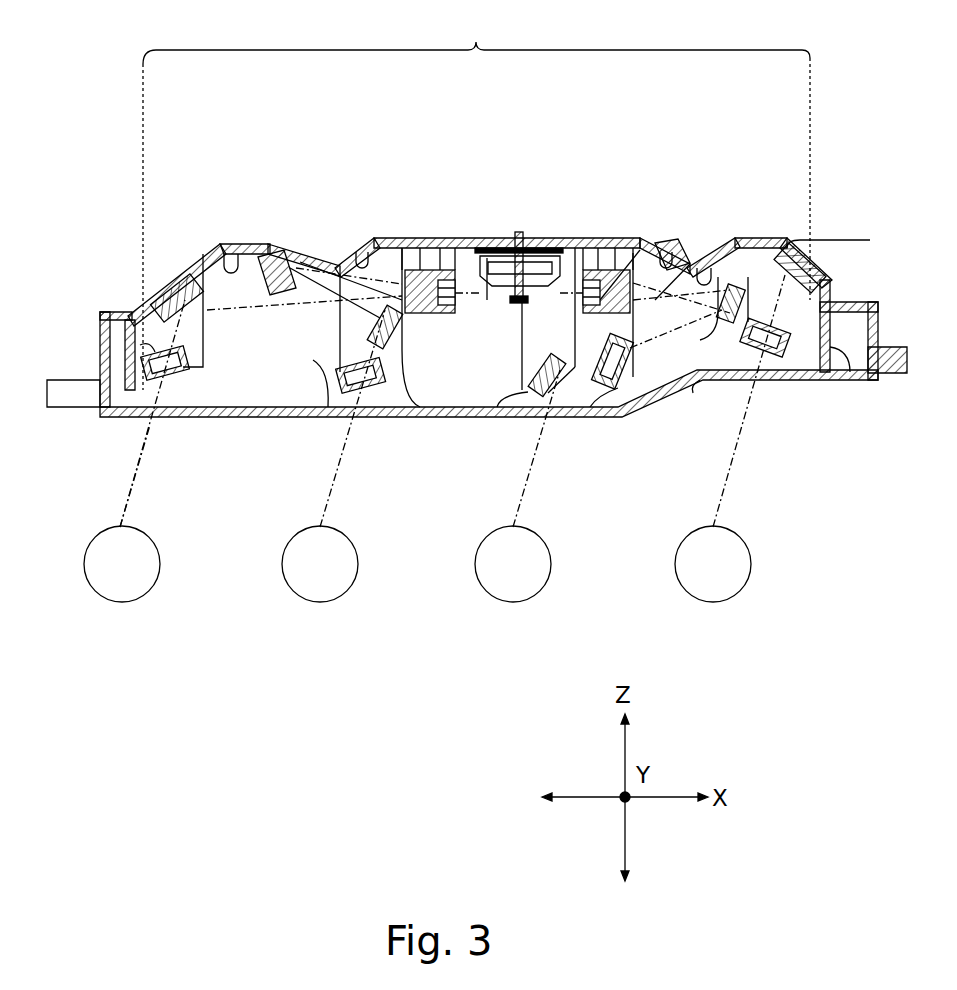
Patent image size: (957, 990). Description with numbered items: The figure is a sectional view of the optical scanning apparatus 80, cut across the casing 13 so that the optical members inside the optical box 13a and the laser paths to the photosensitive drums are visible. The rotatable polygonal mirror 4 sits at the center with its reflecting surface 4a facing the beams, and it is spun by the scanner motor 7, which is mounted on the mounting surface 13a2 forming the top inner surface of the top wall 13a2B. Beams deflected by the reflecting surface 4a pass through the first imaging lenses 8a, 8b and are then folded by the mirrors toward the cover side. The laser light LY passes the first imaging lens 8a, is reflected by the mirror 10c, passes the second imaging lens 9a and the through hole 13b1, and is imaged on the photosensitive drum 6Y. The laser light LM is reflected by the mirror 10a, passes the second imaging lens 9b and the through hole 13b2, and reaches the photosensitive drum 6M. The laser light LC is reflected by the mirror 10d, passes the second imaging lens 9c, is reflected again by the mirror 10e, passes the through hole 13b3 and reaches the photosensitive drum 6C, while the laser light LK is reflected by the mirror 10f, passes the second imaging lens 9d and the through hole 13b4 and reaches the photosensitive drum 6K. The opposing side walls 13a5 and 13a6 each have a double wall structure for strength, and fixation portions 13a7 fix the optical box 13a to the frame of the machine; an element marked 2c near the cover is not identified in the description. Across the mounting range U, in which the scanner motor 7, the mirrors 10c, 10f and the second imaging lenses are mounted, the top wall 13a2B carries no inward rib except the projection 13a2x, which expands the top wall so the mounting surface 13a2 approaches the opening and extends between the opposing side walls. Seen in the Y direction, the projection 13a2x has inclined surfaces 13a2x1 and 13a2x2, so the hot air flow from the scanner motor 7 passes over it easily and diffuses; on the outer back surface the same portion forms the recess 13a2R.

The mounting range U is at (476, 198).
The optical scanning apparatus 80 is at (124, 162).
The casing 13 is at (258, 417).
The optical box 13a is at (183, 268).
The mounting surface 13a2 is at (228, 247).
The top wall 13a2B is at (593, 237).
The recess 13a2R is at (330, 247).
The projection 13a2x is at (343, 247).
The inclined surface 13a2x1 is at (370, 247).
The inclined surface 13a2x2 is at (320, 247).
The side wall 13a5 is at (897, 330).
The side wall 13a6 is at (98, 360).
The fixation portion 13a7 is at (57, 410).
The through hole 13b1 is at (158, 420).
The through hole 13b2 is at (353, 417).
The through hole 13b3 is at (552, 417).
The through hole 13b4 is at (662, 400).
The mirror 10a is at (263, 247).
The mirror 10c is at (150, 292).
The mirror 10d is at (418, 413).
The mirror 10e is at (497, 417).
The mirror 10f is at (780, 243).
The first imaging lens 8a is at (410, 240).
The first imaging lens 8b is at (620, 237).
The scanner motor 7 is at (512, 244).
The rotatable polygonal mirror 4 is at (508, 300).
The reflecting surface 4a is at (463, 243).
The second imaging lens 9a is at (140, 336).
The second imaging lens 9b is at (262, 417).
The second imaging lens 9c is at (647, 413).
The second imaging lens 9d is at (780, 390).
The lens holder 2c is at (598, 413).
The photosensitive drum 6Y is at (138, 603).
The photosensitive drum 6M is at (328, 603).
The photosensitive drum 6C is at (530, 603).
The photosensitive drum 6K is at (720, 603).
The laser light LY is at (133, 495).
The laser light LM is at (335, 475).
The laser light LC is at (527, 488).
The laser light LK is at (727, 478).